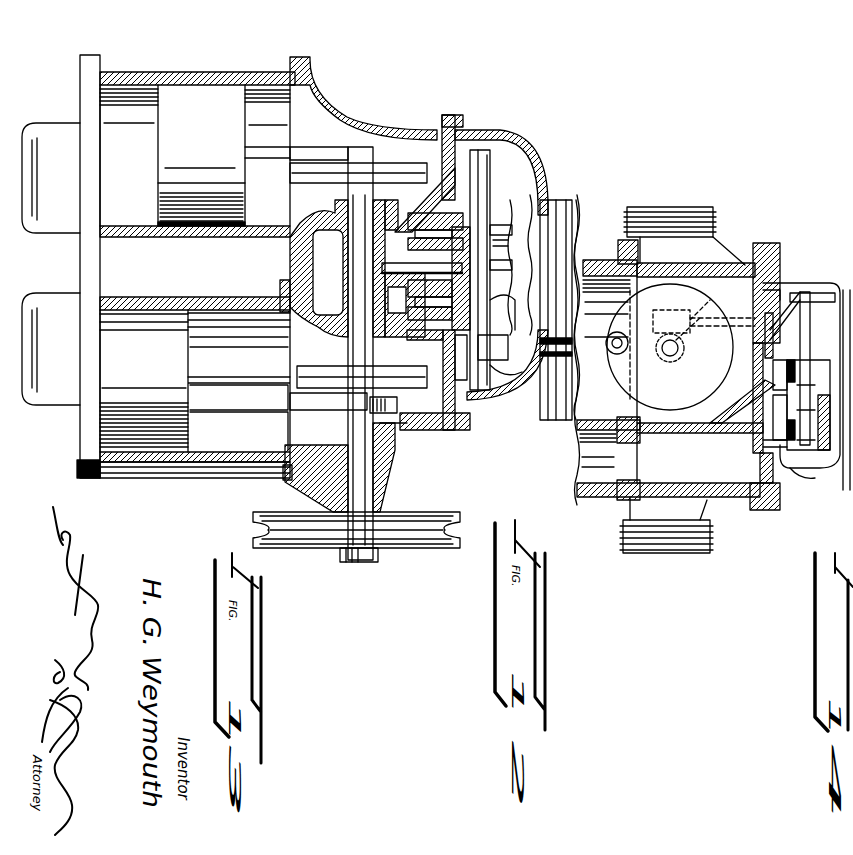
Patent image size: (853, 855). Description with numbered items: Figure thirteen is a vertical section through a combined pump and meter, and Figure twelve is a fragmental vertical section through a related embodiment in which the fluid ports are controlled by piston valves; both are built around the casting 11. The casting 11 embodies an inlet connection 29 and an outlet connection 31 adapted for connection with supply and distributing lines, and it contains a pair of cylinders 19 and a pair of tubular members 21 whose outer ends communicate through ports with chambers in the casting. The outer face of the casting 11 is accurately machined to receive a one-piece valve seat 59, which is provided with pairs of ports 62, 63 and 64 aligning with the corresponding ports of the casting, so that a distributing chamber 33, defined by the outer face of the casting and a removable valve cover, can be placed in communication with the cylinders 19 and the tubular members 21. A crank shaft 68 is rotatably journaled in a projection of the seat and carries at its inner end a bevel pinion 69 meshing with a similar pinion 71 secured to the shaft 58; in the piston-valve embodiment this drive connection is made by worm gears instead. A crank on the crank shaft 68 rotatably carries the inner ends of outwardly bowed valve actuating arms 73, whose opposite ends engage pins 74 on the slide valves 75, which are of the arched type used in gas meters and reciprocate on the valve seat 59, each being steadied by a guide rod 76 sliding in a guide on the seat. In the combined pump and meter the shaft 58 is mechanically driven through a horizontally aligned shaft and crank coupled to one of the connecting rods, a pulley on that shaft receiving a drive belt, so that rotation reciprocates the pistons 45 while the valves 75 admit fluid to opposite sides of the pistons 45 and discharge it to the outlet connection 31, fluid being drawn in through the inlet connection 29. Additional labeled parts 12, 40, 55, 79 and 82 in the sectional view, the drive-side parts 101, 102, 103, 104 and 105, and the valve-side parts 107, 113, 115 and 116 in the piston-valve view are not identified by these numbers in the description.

In FIG. 13, the casting 11 is at (345, 112).
In FIG. 12, the valve chamber 12 is at (790, 277).
In FIG. 13, the cylinders 19 is at (238, 87).
In FIG. 12, the cylinders 19 is at (617, 260).
In FIG. 13, the tubular members 21 is at (78, 443).
In FIG. 12, the tubular members 21 is at (587, 490).
In FIG. 12, the inlet connection 29 is at (697, 220).
In FIG. 12, the outlet connection 31 is at (677, 547).
In FIG. 12, the distributing chamber 33 is at (580, 343).
In FIG. 13, the end cap 40 is at (50, 208).
In FIG. 13, the pistons 45 is at (177, 180).
In FIG. 12, the pistons 45 is at (720, 433).
In FIG. 13, the bolt 55 is at (272, 173).
In FIG. 12, the bolt 55 is at (637, 350).
In FIG. 13, the shaft 58 is at (363, 277).
In FIG. 13, the valve seat 59 is at (465, 395).
In FIG. 12, the ports 62 is at (757, 400).
In FIG. 12, the ports 63 is at (767, 380).
In FIG. 12, the ports 64 is at (763, 438).
In FIG. 13, the crank shaft 68 is at (415, 368).
In FIG. 12, the crank shaft 68 is at (697, 320).
In FIG. 13, the bevel pinion 69 is at (387, 230).
In FIG. 13, the pinion 71 is at (290, 245).
In FIG. 13, the valve actuating arms 73 is at (540, 215).
In FIG. 13, the pins 74 is at (505, 370).
In FIG. 13, the slide valves 75 is at (490, 193).
In FIG. 13, the guide rod 76 is at (512, 292).
In FIG. 13, the pin 79 is at (512, 262).
In FIG. 13, the block 82 is at (552, 385).
In FIG. 13, the hub 101 is at (385, 477).
In FIG. 13, the hub 102 is at (363, 440).
In FIG. 13, the coil section 103 is at (290, 418).
In FIG. 13, the coil section 104 is at (290, 395).
In FIG. 13, the pulley 105 is at (383, 540).
In FIG. 12, the dashed passage 107 is at (717, 317).
In FIG. 12, the spring 113 is at (800, 473).
In FIG. 12, the valve stem 115 is at (800, 320).
In FIG. 12, the valve guide 116 is at (808, 320).